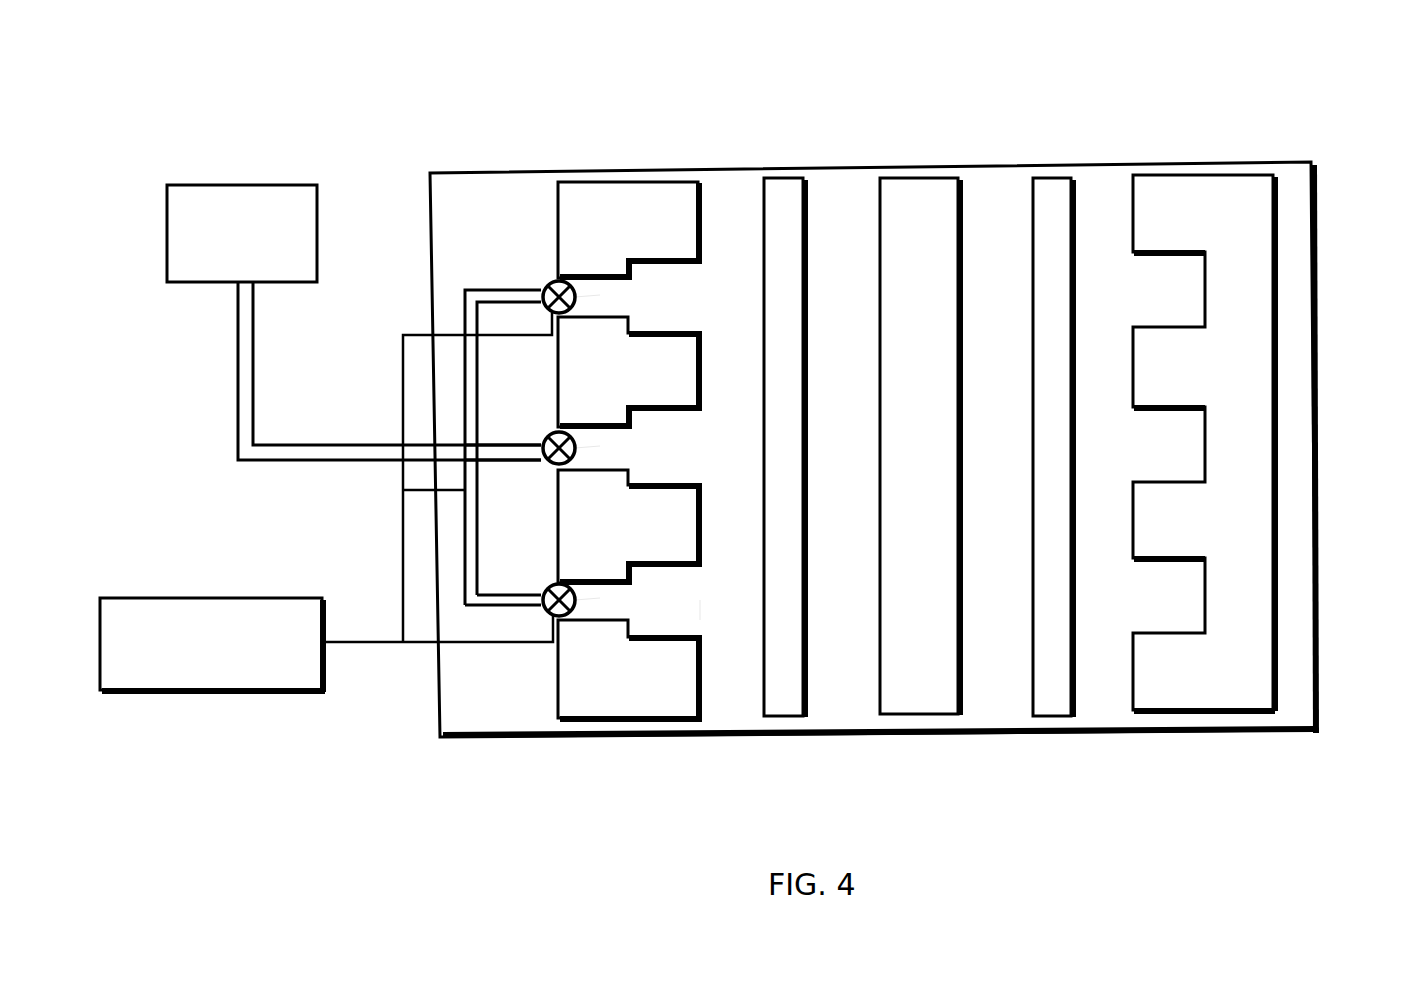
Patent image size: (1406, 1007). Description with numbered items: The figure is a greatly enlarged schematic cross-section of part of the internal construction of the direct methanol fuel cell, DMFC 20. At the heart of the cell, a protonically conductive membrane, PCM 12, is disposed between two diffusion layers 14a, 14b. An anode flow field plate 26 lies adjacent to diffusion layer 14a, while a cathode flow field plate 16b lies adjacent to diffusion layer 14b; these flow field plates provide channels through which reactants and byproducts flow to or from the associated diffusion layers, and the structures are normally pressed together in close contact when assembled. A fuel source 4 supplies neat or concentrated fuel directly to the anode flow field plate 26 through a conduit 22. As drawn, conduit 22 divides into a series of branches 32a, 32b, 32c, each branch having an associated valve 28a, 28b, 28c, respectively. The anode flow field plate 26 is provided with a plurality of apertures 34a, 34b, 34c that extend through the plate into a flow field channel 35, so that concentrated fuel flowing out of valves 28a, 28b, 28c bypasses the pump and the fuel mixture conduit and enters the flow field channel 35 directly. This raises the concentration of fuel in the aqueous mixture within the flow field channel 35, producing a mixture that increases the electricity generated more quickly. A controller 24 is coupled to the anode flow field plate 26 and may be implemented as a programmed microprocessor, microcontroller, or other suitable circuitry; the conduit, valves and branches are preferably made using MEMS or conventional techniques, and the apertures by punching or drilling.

The fuel source 4 is at (200, 185).
The protonically conductive membrane 12 is at (920, 716).
The diffusion layer 14a is at (783, 177).
The diffusion layer 14b is at (1057, 178).
The cathode flow field plate 16b is at (1220, 703).
The DMFC 20 is at (1315, 212).
The conduit 22 is at (337, 460).
The controller 24 is at (203, 693).
The anode flow field plate 26 is at (622, 720).
The valve 28a is at (554, 281).
The valve 28b is at (555, 432).
The valve 28c is at (543, 618).
The branch 32a is at (502, 288).
The branch 32b is at (541, 461).
The branch 32c is at (556, 584).
The aperture 34a is at (576, 297).
The aperture 34b is at (577, 452).
The aperture 34c is at (577, 603).
The flow field channel 35 is at (670, 628).